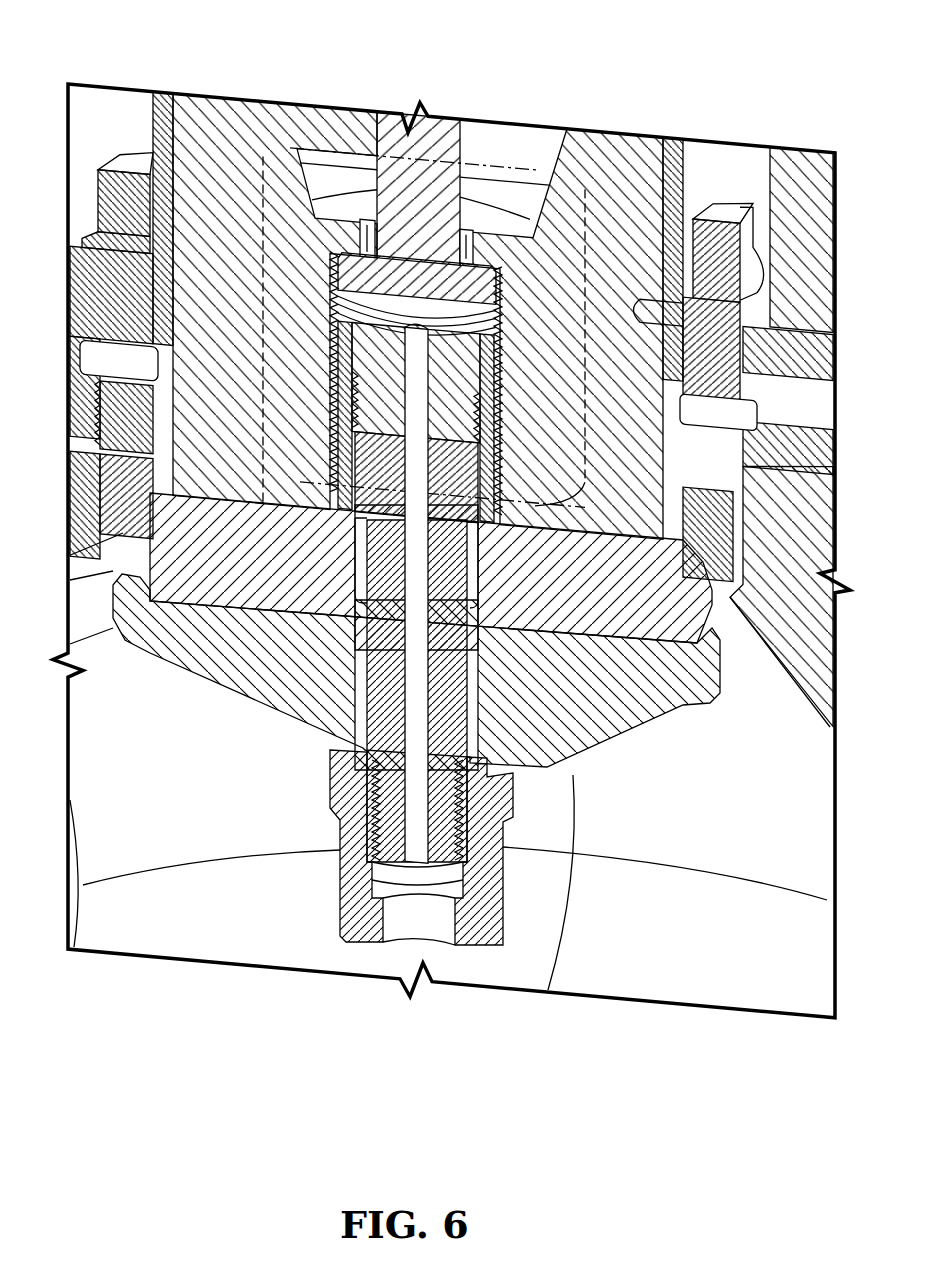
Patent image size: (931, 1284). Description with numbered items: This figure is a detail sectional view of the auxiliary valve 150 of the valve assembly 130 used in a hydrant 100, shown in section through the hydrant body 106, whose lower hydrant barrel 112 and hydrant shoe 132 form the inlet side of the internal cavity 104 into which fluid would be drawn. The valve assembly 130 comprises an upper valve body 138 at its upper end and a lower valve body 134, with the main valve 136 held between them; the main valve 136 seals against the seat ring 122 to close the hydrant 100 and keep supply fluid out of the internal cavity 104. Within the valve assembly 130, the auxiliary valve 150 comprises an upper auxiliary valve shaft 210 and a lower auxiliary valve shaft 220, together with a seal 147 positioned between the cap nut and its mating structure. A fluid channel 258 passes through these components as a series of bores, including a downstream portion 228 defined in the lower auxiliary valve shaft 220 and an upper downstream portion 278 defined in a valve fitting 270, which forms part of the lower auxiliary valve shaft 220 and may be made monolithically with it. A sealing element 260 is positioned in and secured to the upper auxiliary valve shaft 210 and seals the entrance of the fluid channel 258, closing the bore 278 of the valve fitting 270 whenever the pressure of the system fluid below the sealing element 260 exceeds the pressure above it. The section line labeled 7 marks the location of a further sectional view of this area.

The hydrant 100 is at (451, 533).
The hydrant body 106 is at (815, 170).
The lower hydrant barrel 112 is at (785, 391).
The internal cavity 104 is at (764, 190).
The seat ring 122 is at (120, 163).
The hydrant shoe 132 is at (800, 690).
The lower valve body 134 is at (114, 405).
The valve assembly 130 is at (182, 668).
The main valve 136 is at (290, 595).
The upper valve body 138 is at (272, 133).
The seal 147 is at (507, 768).
The auxiliary valve 150 is at (462, 392).
The upper auxiliary valve shaft 210 is at (458, 133).
The lower auxiliary valve shaft 220 is at (353, 674).
The downstream portion 228 is at (417, 810).
The fluid channel 258 is at (468, 812).
The sealing element 260 is at (496, 278).
The valve fitting 270 is at (486, 358).
The upper downstream portion 278 is at (345, 440).
The section line 7 is at (533, 170).